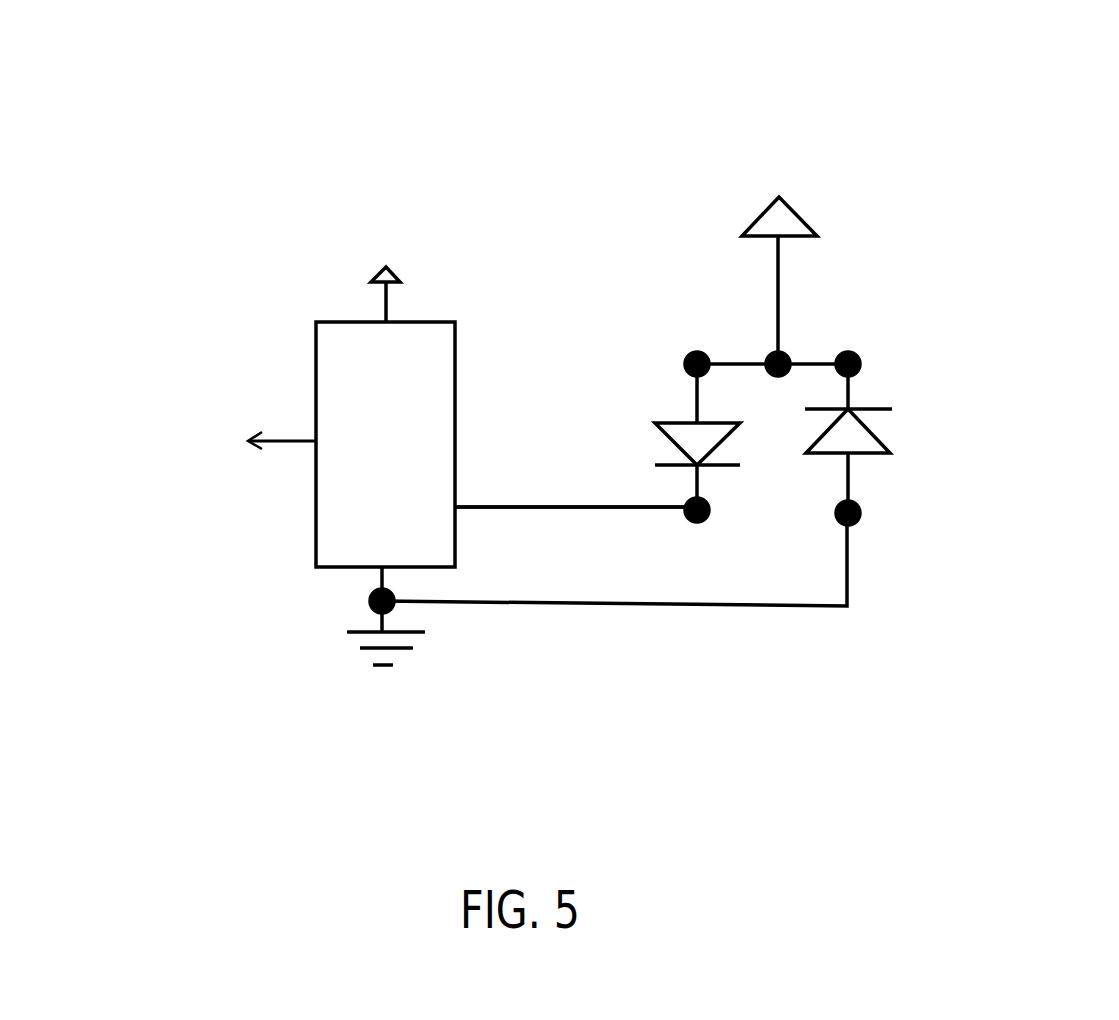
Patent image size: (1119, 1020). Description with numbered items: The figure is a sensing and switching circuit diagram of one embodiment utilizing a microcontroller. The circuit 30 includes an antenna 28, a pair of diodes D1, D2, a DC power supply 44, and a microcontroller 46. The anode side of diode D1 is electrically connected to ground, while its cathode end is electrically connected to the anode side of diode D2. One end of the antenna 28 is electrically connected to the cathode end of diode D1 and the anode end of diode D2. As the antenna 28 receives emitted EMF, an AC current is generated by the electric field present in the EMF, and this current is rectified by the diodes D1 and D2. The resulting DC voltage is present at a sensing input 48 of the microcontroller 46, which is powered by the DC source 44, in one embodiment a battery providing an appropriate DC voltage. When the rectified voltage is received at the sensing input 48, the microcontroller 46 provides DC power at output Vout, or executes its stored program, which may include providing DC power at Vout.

The antenna 28 is at (800, 190).
The circuit 30 is at (933, 200).
The DC power supply 44 is at (394, 252).
The microcontroller 46 is at (457, 355).
The sensing input 48 is at (460, 500).
The diode D1 is at (893, 440).
The diode D2 is at (662, 418).